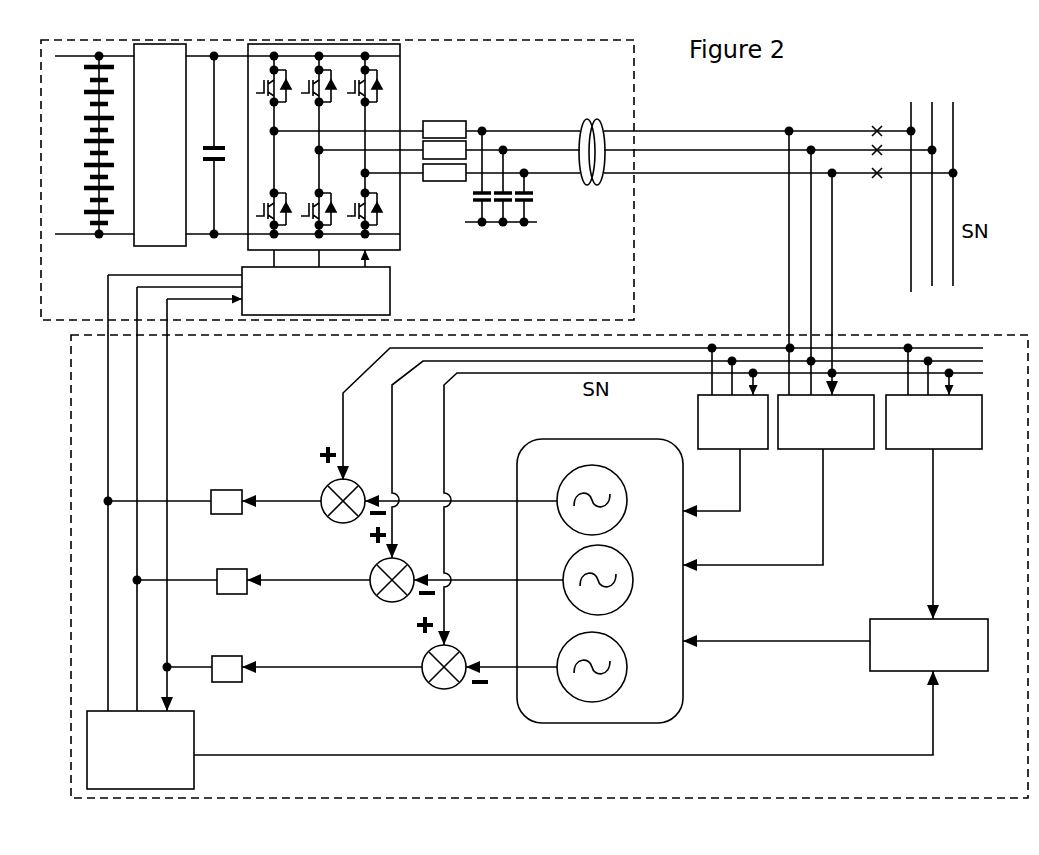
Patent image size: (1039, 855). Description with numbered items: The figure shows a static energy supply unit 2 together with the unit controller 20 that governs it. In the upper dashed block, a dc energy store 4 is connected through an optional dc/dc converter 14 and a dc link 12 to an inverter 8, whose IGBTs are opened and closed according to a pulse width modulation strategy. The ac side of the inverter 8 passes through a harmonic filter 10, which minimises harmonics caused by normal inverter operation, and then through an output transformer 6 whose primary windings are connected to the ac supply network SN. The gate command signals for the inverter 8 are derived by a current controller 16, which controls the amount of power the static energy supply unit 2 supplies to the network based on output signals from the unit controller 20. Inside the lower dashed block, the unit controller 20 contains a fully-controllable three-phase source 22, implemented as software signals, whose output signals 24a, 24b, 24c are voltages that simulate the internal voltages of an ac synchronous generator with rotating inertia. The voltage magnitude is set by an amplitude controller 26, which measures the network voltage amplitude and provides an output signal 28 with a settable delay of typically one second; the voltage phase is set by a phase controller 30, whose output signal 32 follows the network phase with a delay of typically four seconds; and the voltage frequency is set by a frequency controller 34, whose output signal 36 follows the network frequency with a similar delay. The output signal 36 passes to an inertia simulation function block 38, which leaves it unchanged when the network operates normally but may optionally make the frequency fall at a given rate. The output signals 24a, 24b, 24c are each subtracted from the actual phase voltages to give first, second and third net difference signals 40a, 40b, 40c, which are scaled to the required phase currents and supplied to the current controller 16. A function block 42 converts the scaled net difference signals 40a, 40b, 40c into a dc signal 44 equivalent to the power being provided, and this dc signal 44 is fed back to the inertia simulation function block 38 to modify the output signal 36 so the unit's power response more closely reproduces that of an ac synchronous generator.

The static energy supply unit 2 is at (636, 232).
The dc energy store 4 is at (78, 212).
The output transformer 6 is at (582, 199).
The inverter 8 is at (401, 102).
The harmonic filter 10 is at (494, 243).
The dc link 12 is at (219, 132).
The dc/dc converter 14 is at (160, 145).
The current controller 16 is at (249, 282).
The unit controller 20 is at (766, 334).
The fully-controllable three-phase source 22 is at (683, 680).
The output signal for phase A 24a is at (492, 498).
The output signal for phase B 24b is at (493, 577).
The output signal for phase C 24c is at (500, 664).
The amplitude controller 26 is at (733, 398).
The output signal of amplitude controller 28 is at (742, 494).
The phase controller 30 is at (826, 422).
The output signal of phase controller 32 is at (825, 522).
The frequency controller 34 is at (934, 398).
The output signal of frequency controller 36 is at (935, 547).
The inertia simulation function block 38 is at (929, 645).
The first net difference signal 40a is at (290, 499).
The second net difference signal 40b is at (290, 578).
The third net difference signal 40c is at (298, 665).
The function block 42 is at (140, 532).
The dc signal 44 is at (362, 753).